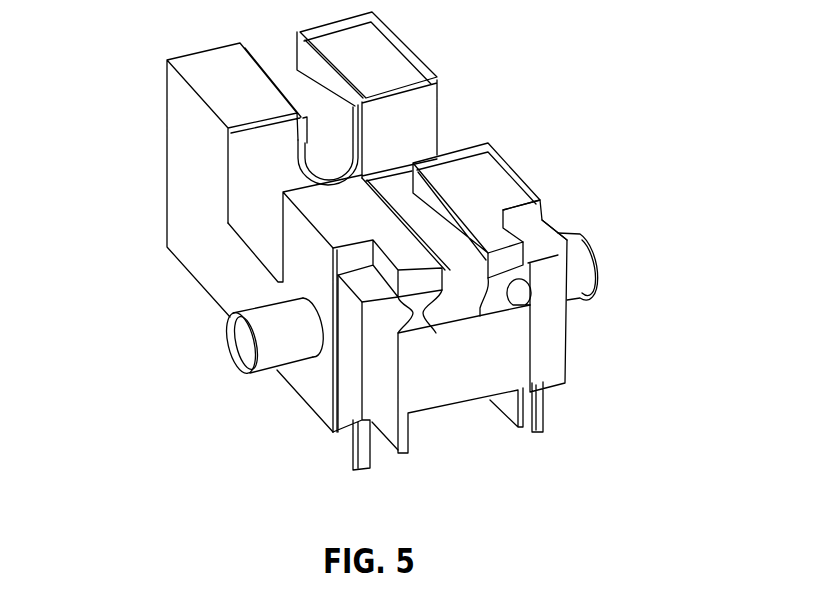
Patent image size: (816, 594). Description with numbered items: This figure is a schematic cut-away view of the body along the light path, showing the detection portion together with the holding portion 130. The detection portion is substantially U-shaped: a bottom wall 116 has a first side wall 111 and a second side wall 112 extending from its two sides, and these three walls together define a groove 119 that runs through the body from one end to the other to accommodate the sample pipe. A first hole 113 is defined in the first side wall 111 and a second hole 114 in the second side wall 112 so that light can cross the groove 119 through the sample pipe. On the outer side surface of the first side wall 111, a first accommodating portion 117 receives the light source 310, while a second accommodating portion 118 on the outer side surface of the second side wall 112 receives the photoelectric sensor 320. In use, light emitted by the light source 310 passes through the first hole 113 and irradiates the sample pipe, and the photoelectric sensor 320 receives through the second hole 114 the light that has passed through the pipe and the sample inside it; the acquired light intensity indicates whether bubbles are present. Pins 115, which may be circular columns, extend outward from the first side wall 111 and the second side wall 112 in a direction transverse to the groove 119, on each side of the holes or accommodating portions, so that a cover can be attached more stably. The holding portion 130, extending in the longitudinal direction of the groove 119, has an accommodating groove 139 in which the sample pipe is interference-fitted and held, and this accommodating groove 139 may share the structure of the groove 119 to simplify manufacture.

The holding portion 130 is at (193, 170).
The accommodating groove 139 is at (322, 113).
The first side wall 111 is at (317, 197).
The second side wall 112 is at (488, 142).
The groove 119 is at (460, 287).
The second accommodating portion 118 is at (530, 215).
The first accommodating portion 117 is at (350, 260).
The light source 310 is at (377, 378).
The first hole 113 is at (423, 312).
The bottom wall 116 is at (463, 365).
The second hole 114 is at (503, 323).
The photoelectric sensor 320 is at (543, 345).
The pins 115 is at (267, 337).